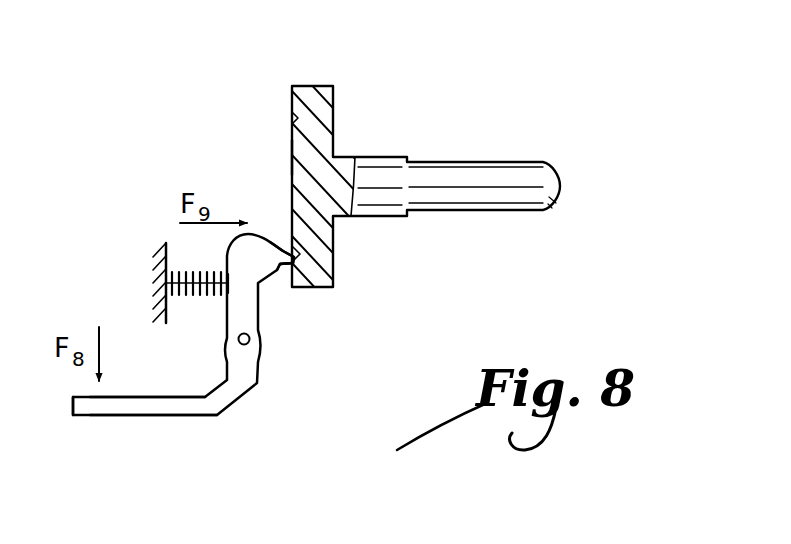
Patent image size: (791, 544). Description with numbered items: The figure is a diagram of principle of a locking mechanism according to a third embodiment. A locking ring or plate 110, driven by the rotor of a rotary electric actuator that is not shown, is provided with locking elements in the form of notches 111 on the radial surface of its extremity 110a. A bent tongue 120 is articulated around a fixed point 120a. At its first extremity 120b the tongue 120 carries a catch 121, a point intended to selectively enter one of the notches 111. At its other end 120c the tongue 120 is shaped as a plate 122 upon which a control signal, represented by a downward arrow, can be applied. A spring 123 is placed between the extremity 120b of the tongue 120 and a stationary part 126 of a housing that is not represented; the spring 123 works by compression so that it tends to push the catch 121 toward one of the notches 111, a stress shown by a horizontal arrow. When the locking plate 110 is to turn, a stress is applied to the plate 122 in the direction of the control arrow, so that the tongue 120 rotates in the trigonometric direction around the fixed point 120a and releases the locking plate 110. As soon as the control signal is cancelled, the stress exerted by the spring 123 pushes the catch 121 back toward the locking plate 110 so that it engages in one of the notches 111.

The locking plate 110 is at (320, 142).
The extremity of the locking plate 110a is at (282, 158).
The notches 111 is at (283, 118).
The bent tongue 120 is at (250, 410).
The fixed point 120a is at (249, 343).
The first extremity of the tongue 120b is at (262, 244).
The other end of the tongue 120c is at (120, 440).
The catch 121 is at (278, 271).
The plate 122 is at (83, 408).
The spring 123 is at (160, 285).
The stationary part 126 is at (153, 260).